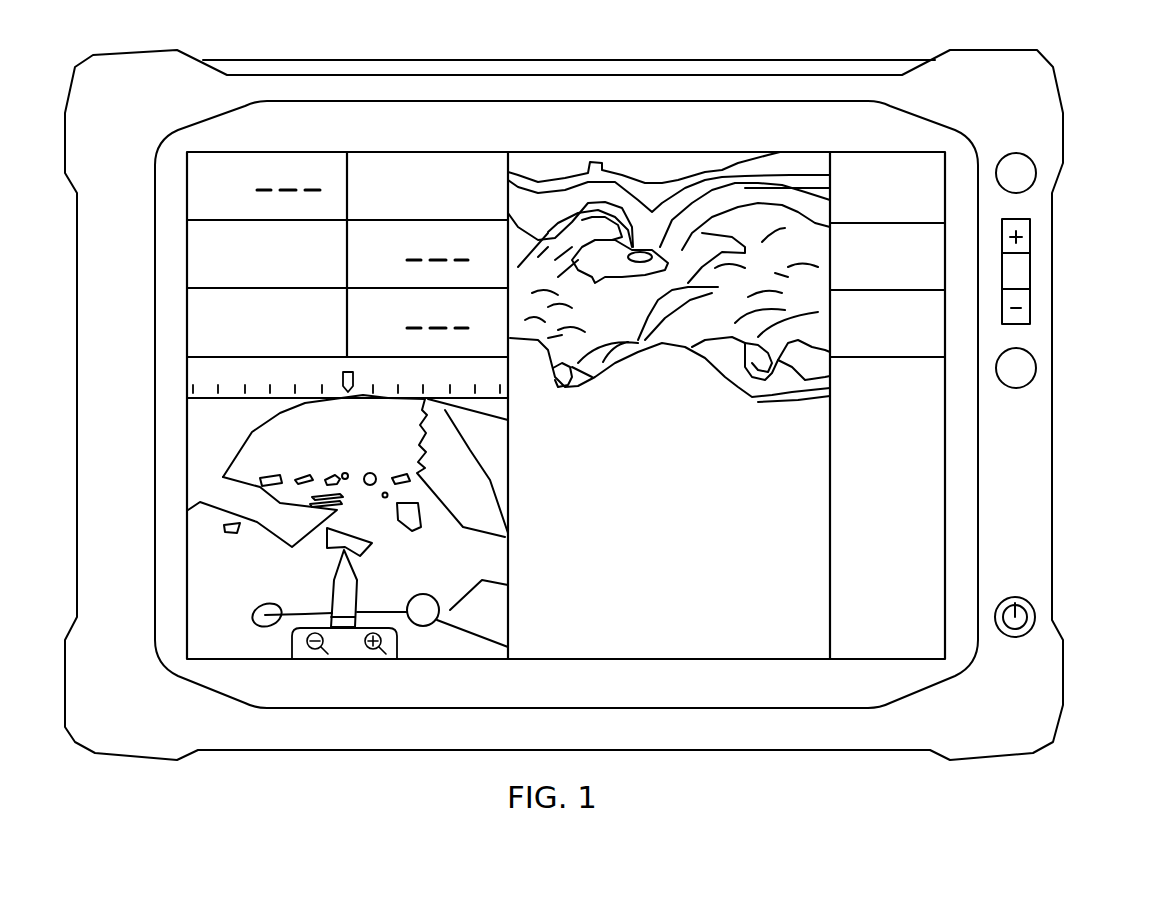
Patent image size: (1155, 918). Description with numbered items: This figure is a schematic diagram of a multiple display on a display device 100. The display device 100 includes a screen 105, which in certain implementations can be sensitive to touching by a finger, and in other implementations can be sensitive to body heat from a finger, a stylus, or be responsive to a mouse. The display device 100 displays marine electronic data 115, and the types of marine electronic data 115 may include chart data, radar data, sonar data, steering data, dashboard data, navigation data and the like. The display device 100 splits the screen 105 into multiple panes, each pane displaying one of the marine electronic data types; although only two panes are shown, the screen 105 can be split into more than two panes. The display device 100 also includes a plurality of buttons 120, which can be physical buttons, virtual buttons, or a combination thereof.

The display device 100 is at (1052, 55).
The screen 105 is at (725, 135).
The marine electronic data 115 is at (297, 443).
The buttons 120 is at (1023, 174).